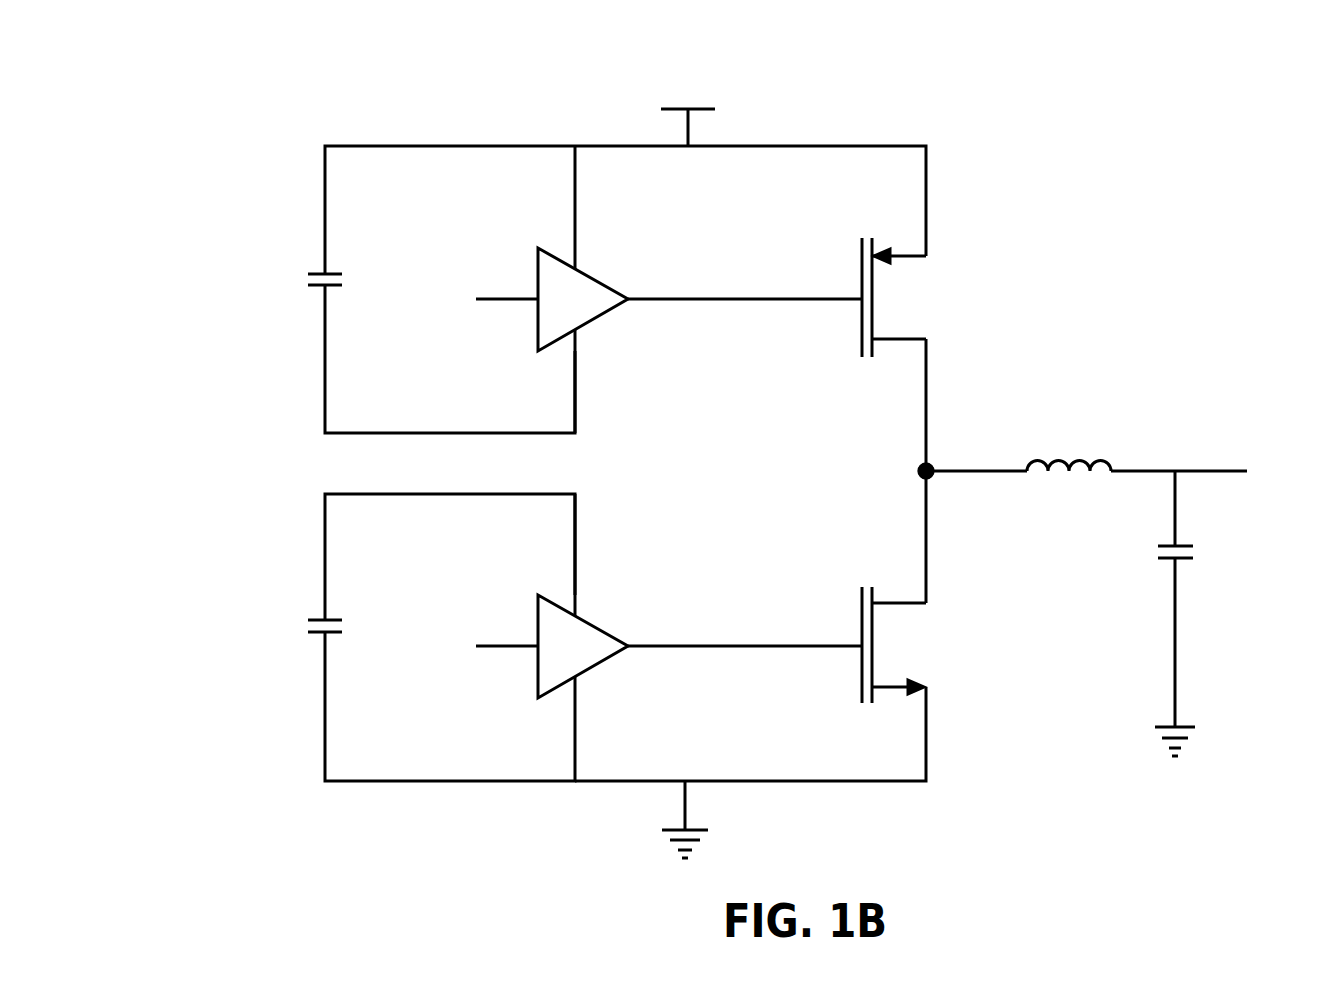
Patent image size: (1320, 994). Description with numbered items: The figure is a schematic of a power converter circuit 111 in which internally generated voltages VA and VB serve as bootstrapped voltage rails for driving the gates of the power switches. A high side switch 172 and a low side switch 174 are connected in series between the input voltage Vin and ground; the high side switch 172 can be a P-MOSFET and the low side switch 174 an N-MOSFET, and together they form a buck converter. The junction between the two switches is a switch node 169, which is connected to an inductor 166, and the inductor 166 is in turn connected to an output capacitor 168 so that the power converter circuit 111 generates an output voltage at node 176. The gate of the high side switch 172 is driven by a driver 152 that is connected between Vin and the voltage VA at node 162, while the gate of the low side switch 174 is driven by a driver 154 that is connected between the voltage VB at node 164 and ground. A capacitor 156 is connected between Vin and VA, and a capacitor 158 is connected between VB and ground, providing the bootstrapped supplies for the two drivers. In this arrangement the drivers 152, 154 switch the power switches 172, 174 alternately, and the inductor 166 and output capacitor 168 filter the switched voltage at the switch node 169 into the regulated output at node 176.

The power converter circuit 111 is at (298, 95).
The driver 152 is at (593, 276).
The driver 154 is at (593, 623).
The capacitor 156 is at (333, 272).
The capacitor 158 is at (333, 618).
The node 162 is at (576, 403).
The node 164 is at (576, 515).
The inductor 166 is at (1075, 462).
The output capacitor 168 is at (1168, 560).
The switch node 169 is at (933, 462).
The high side switch 172 is at (890, 238).
The low side switch 174 is at (890, 575).
The node 176 is at (1240, 470).